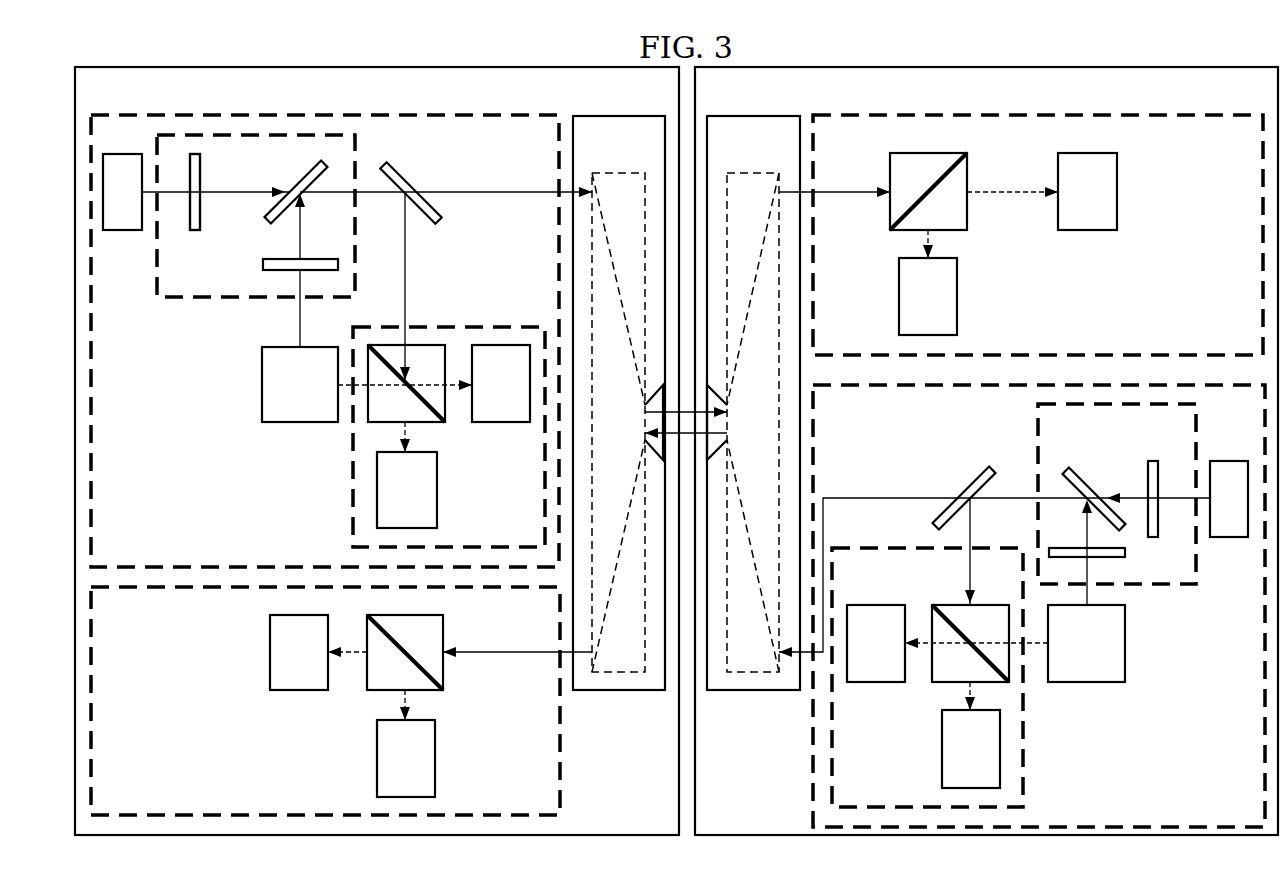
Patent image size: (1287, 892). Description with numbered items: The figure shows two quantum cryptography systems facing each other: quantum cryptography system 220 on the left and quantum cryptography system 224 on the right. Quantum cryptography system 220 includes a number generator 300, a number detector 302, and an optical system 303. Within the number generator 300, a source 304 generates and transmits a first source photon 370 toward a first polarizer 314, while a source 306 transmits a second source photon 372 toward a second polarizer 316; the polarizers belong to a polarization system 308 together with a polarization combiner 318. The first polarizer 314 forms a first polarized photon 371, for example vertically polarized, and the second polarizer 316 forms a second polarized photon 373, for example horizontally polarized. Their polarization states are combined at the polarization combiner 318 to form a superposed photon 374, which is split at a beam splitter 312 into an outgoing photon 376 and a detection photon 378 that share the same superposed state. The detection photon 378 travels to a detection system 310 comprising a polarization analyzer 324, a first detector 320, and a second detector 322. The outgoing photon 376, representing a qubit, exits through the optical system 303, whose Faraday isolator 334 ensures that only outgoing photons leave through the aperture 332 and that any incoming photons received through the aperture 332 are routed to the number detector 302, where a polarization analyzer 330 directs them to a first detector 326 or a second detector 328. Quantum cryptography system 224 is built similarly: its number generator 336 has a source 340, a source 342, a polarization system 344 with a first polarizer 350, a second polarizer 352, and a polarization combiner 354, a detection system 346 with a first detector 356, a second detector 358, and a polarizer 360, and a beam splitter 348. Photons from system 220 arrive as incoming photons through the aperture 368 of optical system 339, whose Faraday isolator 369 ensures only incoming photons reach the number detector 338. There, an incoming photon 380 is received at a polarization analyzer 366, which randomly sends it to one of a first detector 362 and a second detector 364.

The quantum cryptography system 220 is at (614, 106).
The quantum cryptography system 224 is at (1223, 106).
The number generator 300 is at (198, 486).
The number detector 302 is at (198, 717).
The optical system 303 is at (617, 691).
The source 304 is at (123, 231).
The source 306 is at (318, 399).
The polarization system 308 is at (206, 303).
The detection system 310 is at (348, 471).
The beam splitter 312 is at (415, 184).
The first polarizer 314 is at (201, 215).
The second polarizer 316 is at (315, 257).
The polarization combiner 318 is at (290, 188).
The first detector 320 is at (425, 504).
The second detector 322 is at (519, 397).
The polarization analyzer 324 is at (445, 402).
The first detector 326 is at (317, 667).
The second detector 328 is at (424, 772).
The polarization analyzer 330 is at (430, 670).
The aperture 332 is at (650, 410).
The Faraday isolator 334 is at (615, 172).
The number generator 336 is at (1163, 774).
The number detector 338 is at (1129, 314).
The optical system 339 is at (757, 691).
The source 340 is at (1230, 538).
The source 342 is at (1104, 657).
The polarization system 344 is at (1163, 592).
The detection system 346 is at (1030, 708).
The beam splitter 348 is at (962, 487).
The first polarizer 350 is at (1153, 461).
The second polarizer 352 is at (1125, 553).
The polarization combiner 354 is at (1095, 490).
The first detector 356 is at (989, 762).
The second detector 358 is at (894, 657).
The polarizer 360 is at (985, 603).
The first detector 362 is at (946, 310).
The second detector 364 is at (1106, 206).
The polarization analyzer 366 is at (975, 175).
The aperture 368 is at (727, 432).
The Faraday isolator 369 is at (757, 172).
The first source photon 370 is at (181, 194).
The first polarized photon 371 is at (239, 191).
The second source photon 372 is at (298, 315).
The second polarized photon 373 is at (298, 229).
The superposed photon 374 is at (390, 194).
The outgoing photon 376 is at (515, 190).
The detection photon 378 is at (405, 268).
The incoming photon 380 is at (840, 190).